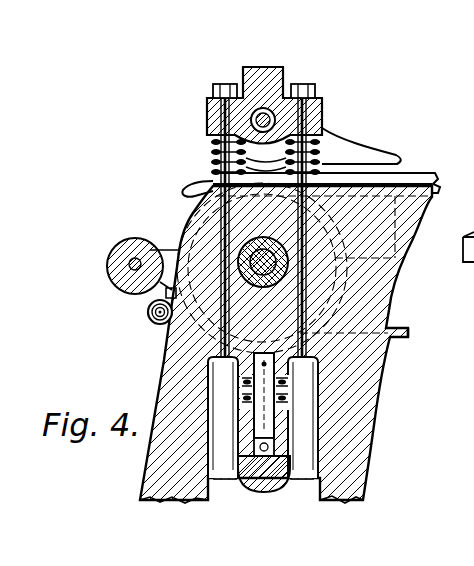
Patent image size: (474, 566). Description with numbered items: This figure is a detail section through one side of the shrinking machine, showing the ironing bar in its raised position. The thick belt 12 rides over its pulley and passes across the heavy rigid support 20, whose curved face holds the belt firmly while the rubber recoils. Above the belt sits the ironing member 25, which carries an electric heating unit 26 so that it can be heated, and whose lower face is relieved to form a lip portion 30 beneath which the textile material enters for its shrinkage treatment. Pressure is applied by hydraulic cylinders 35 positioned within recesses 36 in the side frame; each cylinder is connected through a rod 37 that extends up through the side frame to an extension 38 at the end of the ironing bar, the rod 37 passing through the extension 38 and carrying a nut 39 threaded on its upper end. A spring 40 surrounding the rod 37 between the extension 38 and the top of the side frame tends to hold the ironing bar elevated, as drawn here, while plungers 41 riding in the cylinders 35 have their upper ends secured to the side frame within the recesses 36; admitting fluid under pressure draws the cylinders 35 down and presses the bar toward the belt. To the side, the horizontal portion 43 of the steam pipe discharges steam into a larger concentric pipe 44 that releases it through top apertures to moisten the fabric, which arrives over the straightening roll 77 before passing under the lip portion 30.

The belt 12 is at (410, 332).
The support 20 is at (412, 222).
The ironing member 25 is at (355, 145).
The electric heating unit 26 is at (265, 108).
The lip portion 30 is at (186, 187).
The hydraulic cylinders 35 is at (256, 492).
The recesses 36 is at (318, 500).
The rods 37 is at (325, 378).
The extensions 38 is at (463, 249).
The nuts 39 is at (300, 84).
The springs 40 is at (320, 142).
The plungers 41 is at (278, 430).
The horizontal portion 43 is at (150, 325).
The larger pipe 44 is at (150, 312).
The roll 77 is at (125, 245).